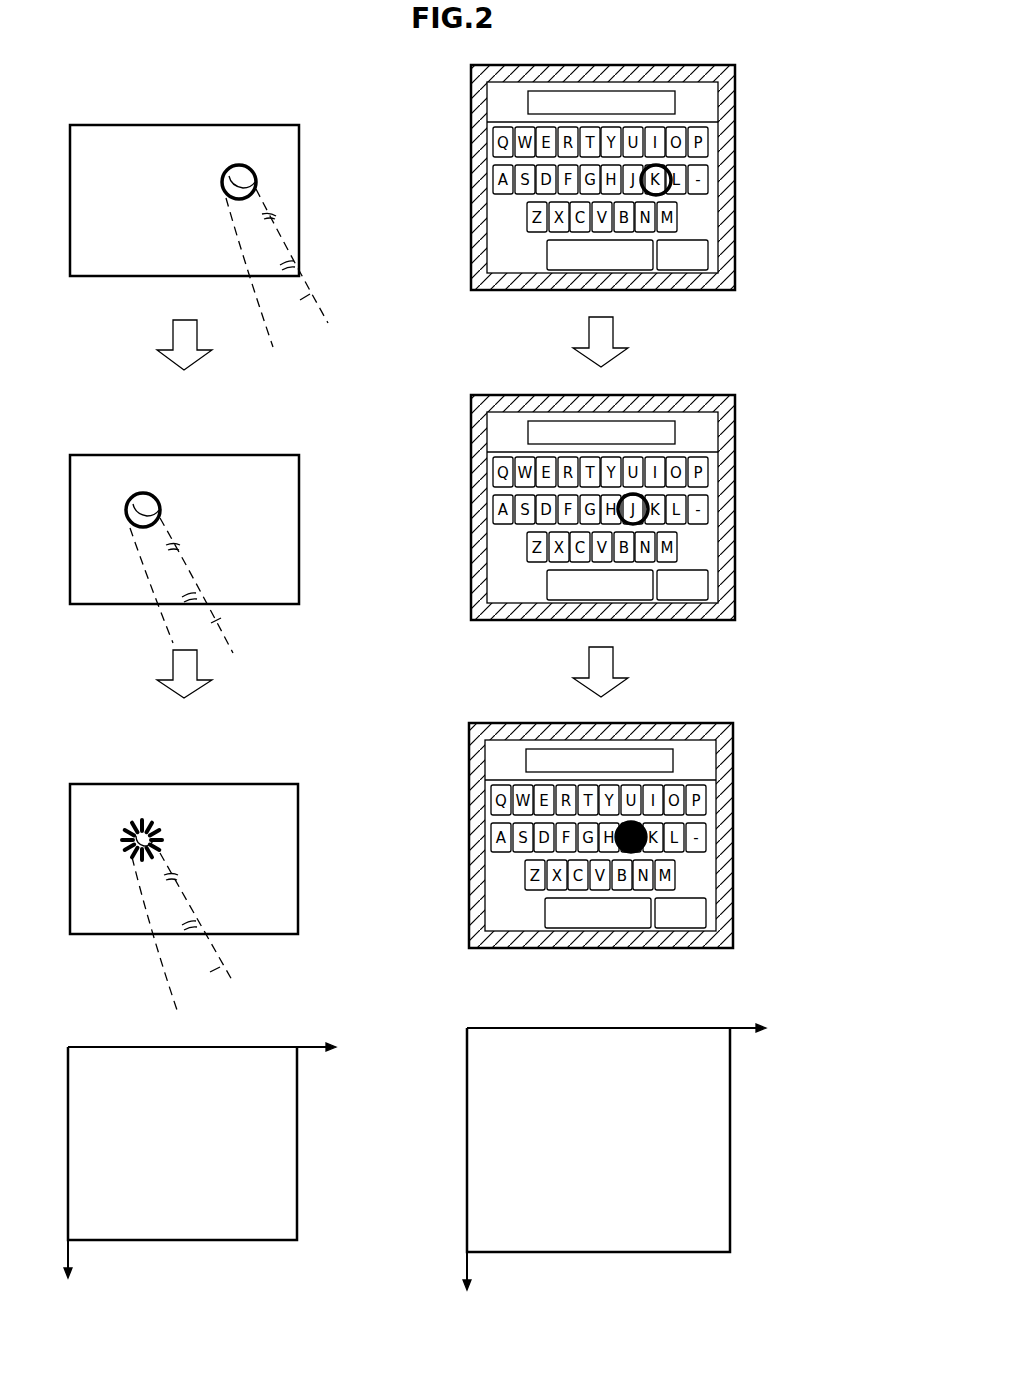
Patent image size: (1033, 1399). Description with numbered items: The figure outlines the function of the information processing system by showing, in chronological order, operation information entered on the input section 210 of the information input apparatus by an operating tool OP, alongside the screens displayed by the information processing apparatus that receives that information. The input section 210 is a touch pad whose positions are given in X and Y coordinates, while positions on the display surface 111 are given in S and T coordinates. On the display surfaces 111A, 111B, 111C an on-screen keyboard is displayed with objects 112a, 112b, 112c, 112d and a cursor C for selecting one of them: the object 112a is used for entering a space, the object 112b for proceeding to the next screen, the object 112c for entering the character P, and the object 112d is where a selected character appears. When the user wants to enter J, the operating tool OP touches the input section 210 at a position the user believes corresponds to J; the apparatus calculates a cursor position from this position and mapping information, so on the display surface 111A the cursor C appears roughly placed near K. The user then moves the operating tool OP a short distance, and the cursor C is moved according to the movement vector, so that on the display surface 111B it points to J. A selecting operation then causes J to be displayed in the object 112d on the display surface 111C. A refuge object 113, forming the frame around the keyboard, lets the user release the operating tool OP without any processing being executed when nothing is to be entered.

The input section 210 is at (273, 163).
The operating tool OP is at (305, 297).
The display surface 111A is at (757, 66).
The display surface 111B is at (662, 490).
The display surface 111C is at (660, 818).
The display surface 111 is at (489, 1183).
The refuge object 113 is at (725, 212).
The object 112d is at (677, 100).
The object 112c is at (709, 138).
The object 112b is at (710, 252).
The object 112a is at (633, 271).
The cursor C is at (673, 170).